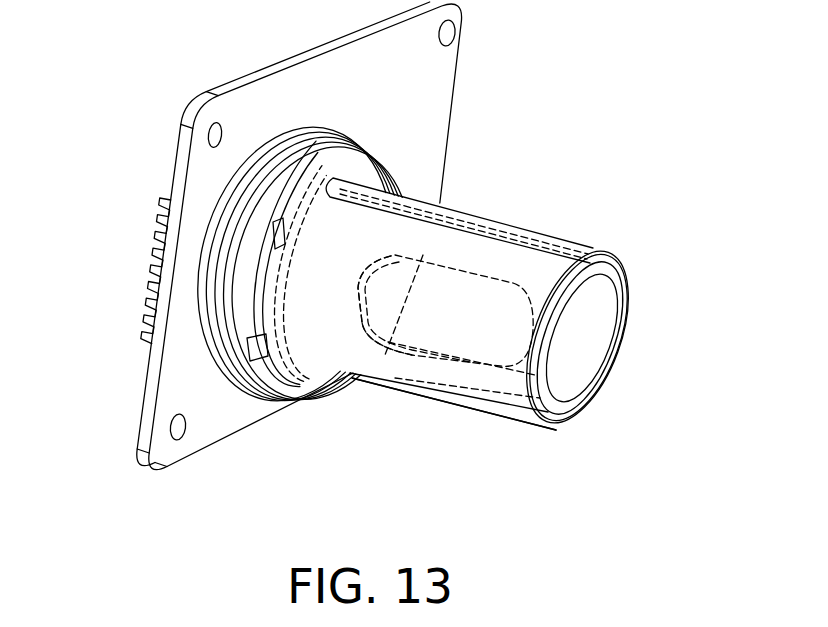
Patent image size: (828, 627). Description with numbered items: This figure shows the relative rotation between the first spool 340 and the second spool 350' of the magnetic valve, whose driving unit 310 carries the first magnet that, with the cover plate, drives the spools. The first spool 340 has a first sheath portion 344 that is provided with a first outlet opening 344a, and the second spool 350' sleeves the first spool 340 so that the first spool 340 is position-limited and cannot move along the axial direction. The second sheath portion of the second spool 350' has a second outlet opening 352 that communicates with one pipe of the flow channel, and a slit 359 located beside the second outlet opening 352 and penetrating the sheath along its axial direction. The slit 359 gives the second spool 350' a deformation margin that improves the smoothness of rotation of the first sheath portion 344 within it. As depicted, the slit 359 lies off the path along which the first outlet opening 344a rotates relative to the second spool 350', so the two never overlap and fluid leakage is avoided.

The driving unit 310 is at (153, 235).
The first spool 340 is at (400, 470).
The first sheath portion 344 is at (317, 307).
The first outlet opening 344a is at (440, 325).
The second spool 350' is at (533, 337).
The second outlet opening 352 is at (460, 405).
The slit 359 is at (482, 234).